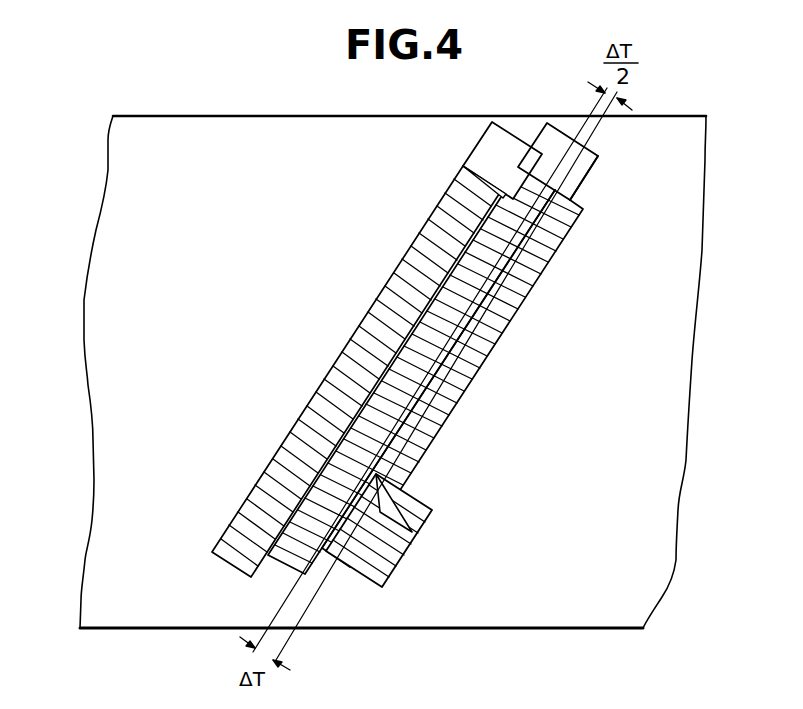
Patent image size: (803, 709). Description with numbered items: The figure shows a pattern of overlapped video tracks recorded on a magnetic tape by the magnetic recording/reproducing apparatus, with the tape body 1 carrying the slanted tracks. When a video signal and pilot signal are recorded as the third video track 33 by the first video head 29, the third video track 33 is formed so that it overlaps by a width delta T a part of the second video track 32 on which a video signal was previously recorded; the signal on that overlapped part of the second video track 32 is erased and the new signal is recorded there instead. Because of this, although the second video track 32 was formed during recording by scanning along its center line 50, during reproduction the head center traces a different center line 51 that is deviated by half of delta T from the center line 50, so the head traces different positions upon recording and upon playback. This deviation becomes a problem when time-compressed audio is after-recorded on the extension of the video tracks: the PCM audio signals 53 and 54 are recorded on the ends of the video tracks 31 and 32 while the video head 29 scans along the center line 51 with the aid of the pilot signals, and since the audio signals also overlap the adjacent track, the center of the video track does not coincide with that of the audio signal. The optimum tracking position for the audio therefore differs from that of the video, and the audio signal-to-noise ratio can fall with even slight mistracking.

The base plate 1 is at (553, 631).
The first video head 29 is at (424, 504).
The video track 31 is at (220, 558).
The second video track 32 is at (280, 560).
The third video track 33 is at (348, 575).
The center line 50 is at (592, 137).
The center line 51 is at (578, 138).
The PCM audio signal 53 is at (476, 148).
The PCM audio signal 54 is at (583, 173).